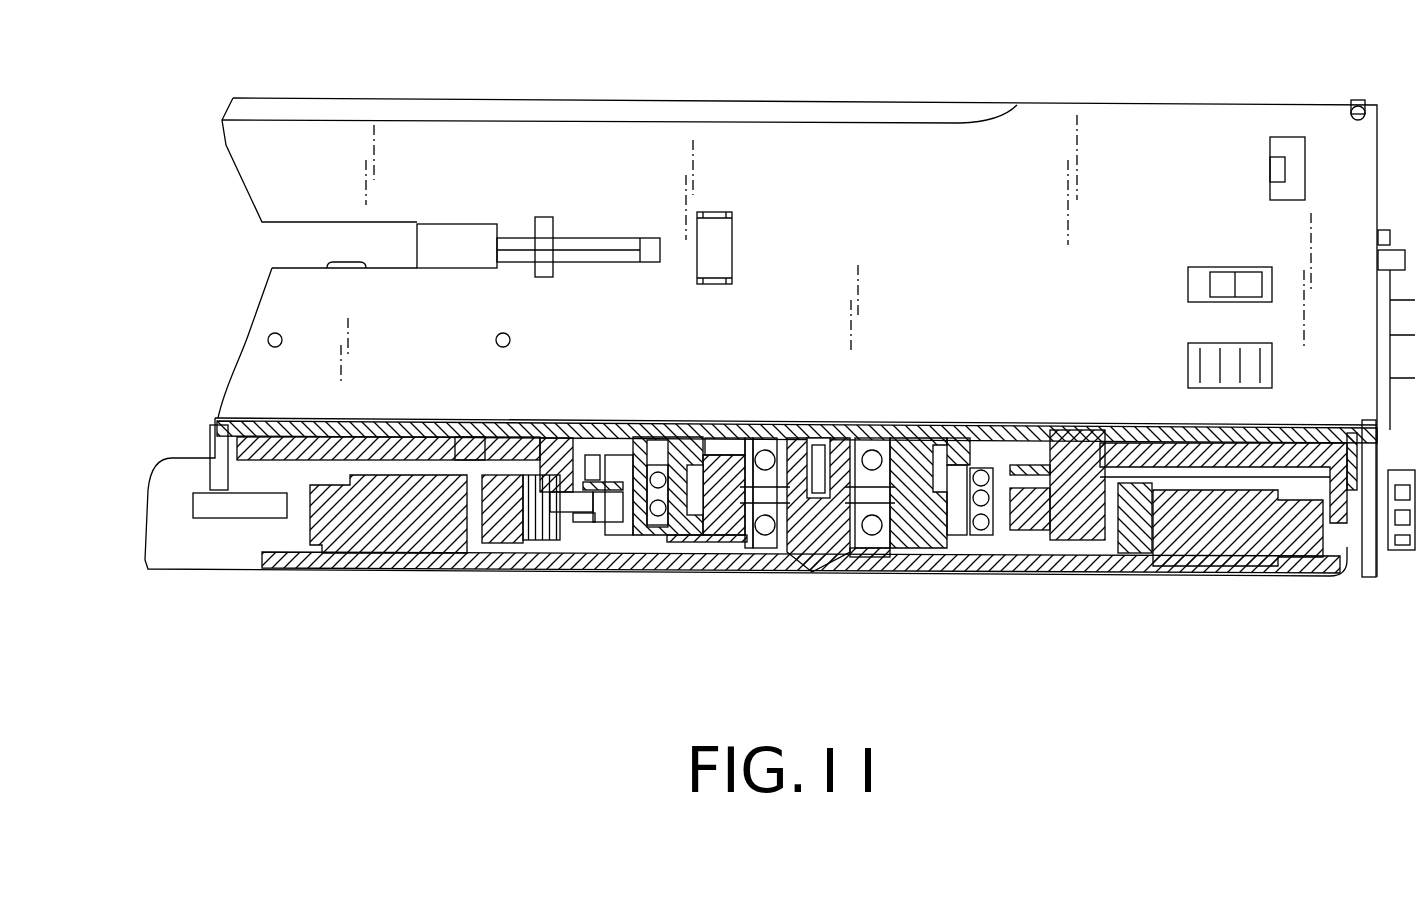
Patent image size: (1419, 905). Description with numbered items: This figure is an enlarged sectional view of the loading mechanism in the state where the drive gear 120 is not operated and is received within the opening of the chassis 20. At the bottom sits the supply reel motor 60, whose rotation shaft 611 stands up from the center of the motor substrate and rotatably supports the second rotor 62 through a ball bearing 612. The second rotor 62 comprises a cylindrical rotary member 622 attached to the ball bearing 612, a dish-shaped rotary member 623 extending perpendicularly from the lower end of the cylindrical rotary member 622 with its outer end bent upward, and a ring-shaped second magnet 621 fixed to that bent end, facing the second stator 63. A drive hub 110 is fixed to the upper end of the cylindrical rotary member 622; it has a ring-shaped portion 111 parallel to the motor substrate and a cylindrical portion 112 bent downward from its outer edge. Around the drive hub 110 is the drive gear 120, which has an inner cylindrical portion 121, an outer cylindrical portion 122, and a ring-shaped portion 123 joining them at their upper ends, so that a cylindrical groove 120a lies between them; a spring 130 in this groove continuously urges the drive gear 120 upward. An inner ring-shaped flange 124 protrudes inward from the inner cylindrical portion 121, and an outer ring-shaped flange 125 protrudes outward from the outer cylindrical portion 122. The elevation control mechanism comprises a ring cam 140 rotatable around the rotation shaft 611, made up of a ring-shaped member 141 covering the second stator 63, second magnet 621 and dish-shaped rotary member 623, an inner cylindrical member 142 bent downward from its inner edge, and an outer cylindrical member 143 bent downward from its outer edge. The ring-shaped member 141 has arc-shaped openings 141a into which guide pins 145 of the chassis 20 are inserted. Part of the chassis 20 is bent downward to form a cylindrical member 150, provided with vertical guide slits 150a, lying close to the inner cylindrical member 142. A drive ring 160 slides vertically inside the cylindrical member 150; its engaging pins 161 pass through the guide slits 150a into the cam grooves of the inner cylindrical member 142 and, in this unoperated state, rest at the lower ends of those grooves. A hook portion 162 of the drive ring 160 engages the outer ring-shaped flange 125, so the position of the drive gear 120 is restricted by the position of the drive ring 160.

The chassis 20 is at (1105, 438).
The supply reel motor 60 is at (700, 575).
The second rotor 62 is at (738, 572).
The second stator 63 is at (418, 575).
The drive hub 110 is at (705, 361).
The ring-shaped portion 111 is at (927, 437).
The cylindrical portion 112 is at (915, 450).
The drive gear 120 is at (994, 354).
The cylindrical groove 120a is at (975, 440).
The inner cylindrical portion 121 is at (665, 575).
The outer cylindrical portion 122 is at (618, 455).
The ring-shaped portion 123 is at (655, 440).
The inner ring-shaped flange 124 is at (712, 455).
The outer ring-shaped flange 125 is at (620, 575).
The spring 130 is at (975, 572).
The ring cam 140 is at (1210, 458).
The ring-shaped member 141 is at (390, 450).
The arc-shaped openings 141a is at (470, 445).
The inner cylindrical member 142 is at (535, 460).
The outer cylindrical member 143 is at (300, 460).
The guide pins 145 is at (1165, 455).
The cylindrical member 150 is at (1043, 462).
The guide slits 150a is at (585, 455).
The drive ring 160 is at (786, 283).
The engaging pins 161 is at (555, 470).
The hook portion 162 is at (1028, 470).
The rotation shaft 611 is at (835, 572).
The ball bearing 612 is at (787, 572).
The second magnet 621 is at (505, 572).
The cylindrical rotary member 622 is at (905, 572).
The dish-shaped rotary member 623 is at (557, 570).